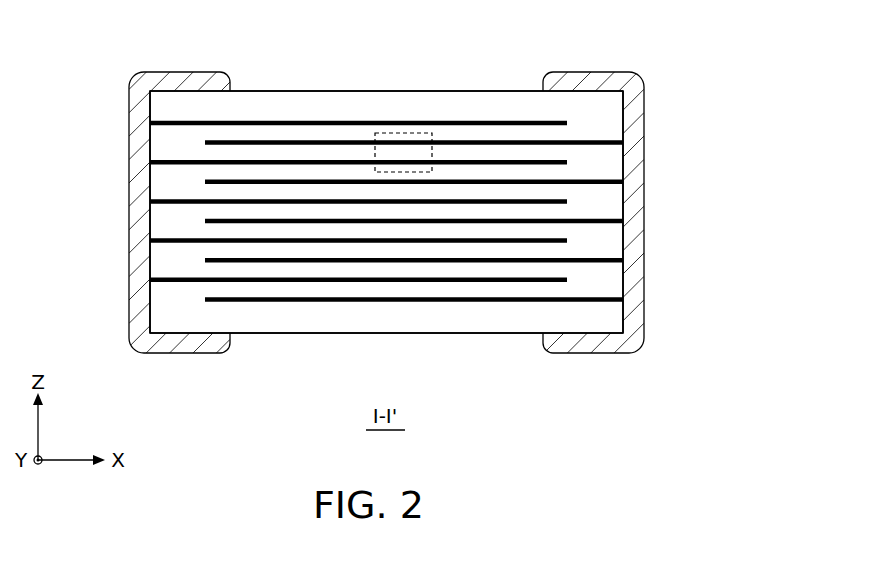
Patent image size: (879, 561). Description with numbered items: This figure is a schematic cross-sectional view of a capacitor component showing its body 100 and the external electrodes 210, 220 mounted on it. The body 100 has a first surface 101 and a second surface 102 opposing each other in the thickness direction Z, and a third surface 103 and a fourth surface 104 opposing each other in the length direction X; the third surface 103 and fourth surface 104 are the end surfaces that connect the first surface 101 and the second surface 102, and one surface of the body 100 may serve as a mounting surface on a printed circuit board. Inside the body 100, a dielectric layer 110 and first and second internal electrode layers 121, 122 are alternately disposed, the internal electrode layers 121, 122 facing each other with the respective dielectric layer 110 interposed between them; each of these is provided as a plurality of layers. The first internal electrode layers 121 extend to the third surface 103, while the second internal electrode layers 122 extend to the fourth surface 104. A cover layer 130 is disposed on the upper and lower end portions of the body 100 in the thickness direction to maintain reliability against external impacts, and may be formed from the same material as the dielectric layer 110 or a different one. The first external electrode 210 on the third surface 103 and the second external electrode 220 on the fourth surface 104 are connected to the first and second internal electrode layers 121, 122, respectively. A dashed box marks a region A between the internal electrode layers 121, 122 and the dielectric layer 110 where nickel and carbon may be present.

The body 100 is at (386, 195).
The first surface 101 is at (258, 336).
The second surface 102 is at (244, 91).
The third surface 103 is at (150, 108).
The fourth surface 104 is at (622, 108).
The dielectric layer 110 is at (450, 138).
The first internal electrode layer 121 is at (300, 123).
The second internal electrode layer 122 is at (354, 141).
The cover layer 130 is at (505, 98).
The first external electrode 210 is at (140, 238).
The second external electrode 220 is at (632, 238).
The region A is at (402, 135).